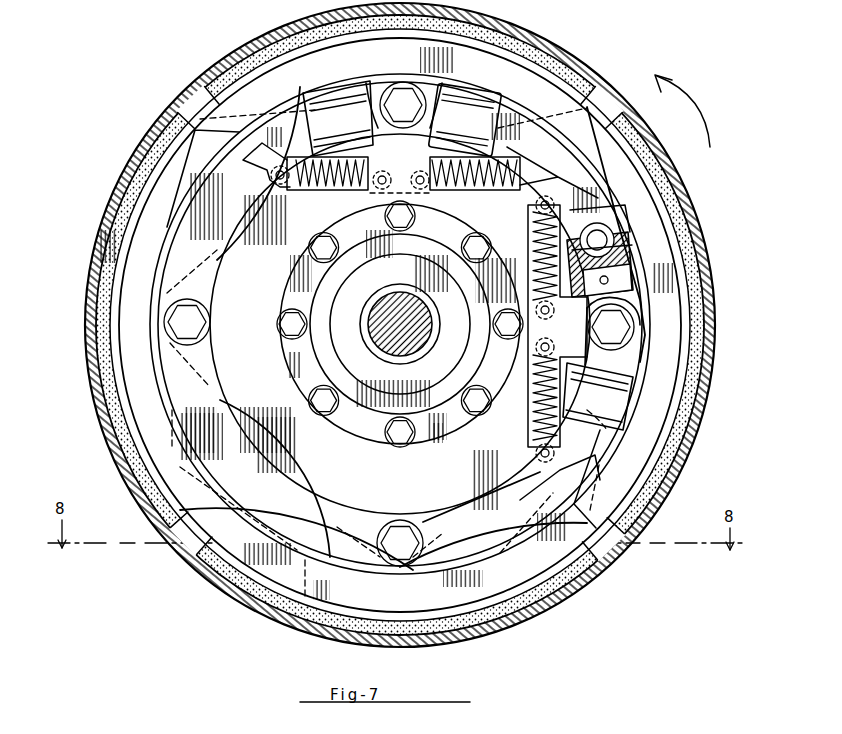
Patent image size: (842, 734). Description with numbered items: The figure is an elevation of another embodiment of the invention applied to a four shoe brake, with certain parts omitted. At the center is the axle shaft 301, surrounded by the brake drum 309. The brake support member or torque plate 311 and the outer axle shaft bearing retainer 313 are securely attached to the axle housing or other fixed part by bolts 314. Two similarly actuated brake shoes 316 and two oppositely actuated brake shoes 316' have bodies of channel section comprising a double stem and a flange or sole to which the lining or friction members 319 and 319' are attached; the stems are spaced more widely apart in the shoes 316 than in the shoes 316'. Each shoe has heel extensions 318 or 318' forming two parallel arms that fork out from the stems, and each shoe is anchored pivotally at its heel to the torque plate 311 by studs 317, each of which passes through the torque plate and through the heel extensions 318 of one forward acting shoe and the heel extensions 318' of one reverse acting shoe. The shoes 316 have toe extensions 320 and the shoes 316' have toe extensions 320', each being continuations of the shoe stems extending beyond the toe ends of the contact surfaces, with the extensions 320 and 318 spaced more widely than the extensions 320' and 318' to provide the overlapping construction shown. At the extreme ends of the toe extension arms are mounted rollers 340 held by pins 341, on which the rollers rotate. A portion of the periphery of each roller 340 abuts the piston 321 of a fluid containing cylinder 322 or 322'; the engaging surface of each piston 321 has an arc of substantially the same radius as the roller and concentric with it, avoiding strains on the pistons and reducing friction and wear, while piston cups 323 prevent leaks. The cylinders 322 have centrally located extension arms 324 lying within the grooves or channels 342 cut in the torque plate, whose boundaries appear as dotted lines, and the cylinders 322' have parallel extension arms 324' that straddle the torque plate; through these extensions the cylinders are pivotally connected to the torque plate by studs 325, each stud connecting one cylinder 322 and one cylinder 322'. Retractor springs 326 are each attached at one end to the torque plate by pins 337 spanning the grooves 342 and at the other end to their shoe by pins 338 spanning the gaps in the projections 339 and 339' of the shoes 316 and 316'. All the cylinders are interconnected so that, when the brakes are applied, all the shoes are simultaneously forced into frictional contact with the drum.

The axle shaft 301 is at (415, 324).
The brake drum 309 is at (700, 246).
The torque plate 311 is at (388, 324).
The outer axle shaft bearing retainer 313 is at (400, 324).
The bolts 314 is at (290, 328).
The similarly actuated brake shoes 316 is at (387, 314).
The oppositely actuated brake shoes 316' is at (401, 325).
The studs 317 is at (200, 321).
The heel extensions 318 is at (400, 341).
The heel extensions 318' is at (381, 345).
The lining or friction members 319 is at (383, 325).
The lining or friction members 319' is at (434, 325).
The toe extensions 320 is at (374, 144).
The toe extensions 320' is at (609, 292).
The pistons 321 is at (630, 250).
The cylinders 322 is at (531, 255).
The cylinders 322' is at (470, 109).
The piston cups 323 is at (630, 268).
The extension arms 324 is at (548, 202).
The extension arms 324' is at (554, 213).
The studs 325 is at (403, 97).
The retractor springs 326 is at (340, 192).
The pins 337 is at (403, 168).
The pins 338 is at (276, 182).
The projections 339 is at (420, 167).
The projections 339' is at (578, 477).
The rollers 340 is at (605, 233).
The pins 341 is at (615, 240).
The grooves or channels 342 is at (430, 196).